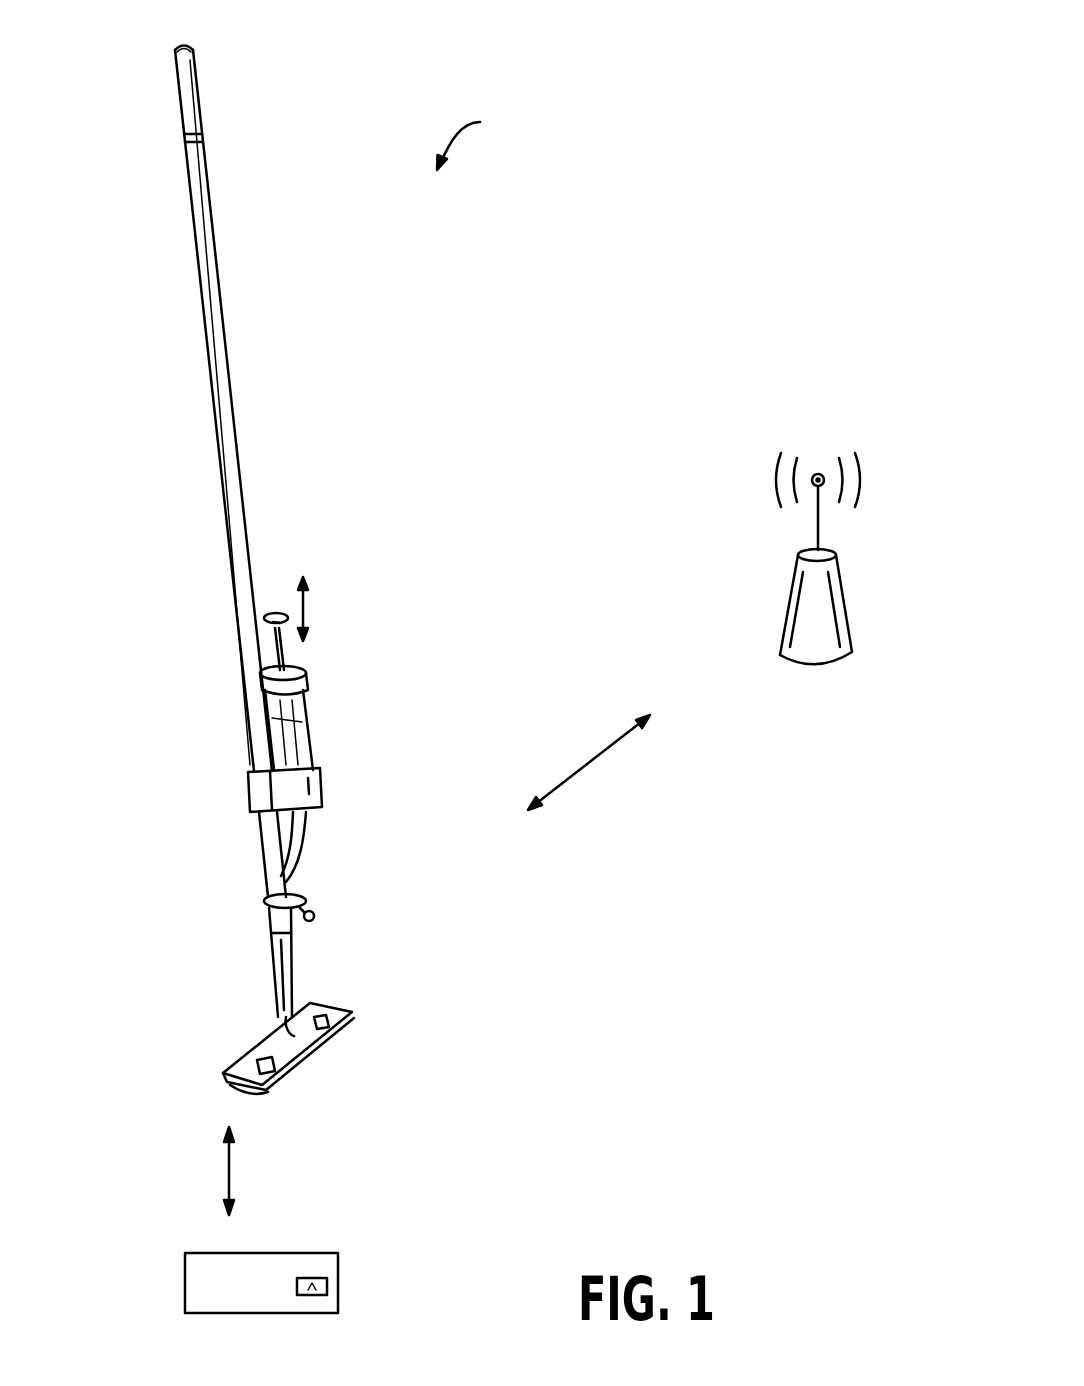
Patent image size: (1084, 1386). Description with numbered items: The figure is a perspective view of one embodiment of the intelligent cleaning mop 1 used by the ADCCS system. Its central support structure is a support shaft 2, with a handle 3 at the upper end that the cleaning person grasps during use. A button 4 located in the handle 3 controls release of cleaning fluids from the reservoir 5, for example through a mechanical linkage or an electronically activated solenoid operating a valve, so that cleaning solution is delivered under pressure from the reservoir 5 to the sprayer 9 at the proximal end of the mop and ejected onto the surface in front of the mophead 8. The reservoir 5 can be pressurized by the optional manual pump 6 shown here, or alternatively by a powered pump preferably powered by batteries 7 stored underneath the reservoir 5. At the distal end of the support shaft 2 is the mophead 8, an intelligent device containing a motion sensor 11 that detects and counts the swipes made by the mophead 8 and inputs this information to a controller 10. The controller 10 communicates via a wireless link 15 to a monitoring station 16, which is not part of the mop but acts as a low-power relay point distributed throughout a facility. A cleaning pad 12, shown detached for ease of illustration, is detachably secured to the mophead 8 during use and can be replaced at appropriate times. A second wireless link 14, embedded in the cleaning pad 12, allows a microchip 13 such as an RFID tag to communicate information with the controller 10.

The intelligent cleaning mop 1 is at (473, 133).
The support shaft 2 is at (203, 320).
The handle 3 is at (177, 100).
The button 4 is at (183, 50).
The reservoir 5 is at (308, 733).
The manual pump 6 is at (277, 610).
The batteries 7 is at (322, 800).
The mophead 8 is at (280, 1022).
The sprayer 9 is at (314, 916).
The controller 10 is at (283, 1085).
The motion sensor 11 is at (357, 1013).
The cleaning pad 12 is at (203, 1313).
The microchip 13 is at (337, 1280).
The wireless link 14 is at (227, 1168).
The wireless link 15 is at (585, 763).
The monitoring station 16 is at (825, 628).